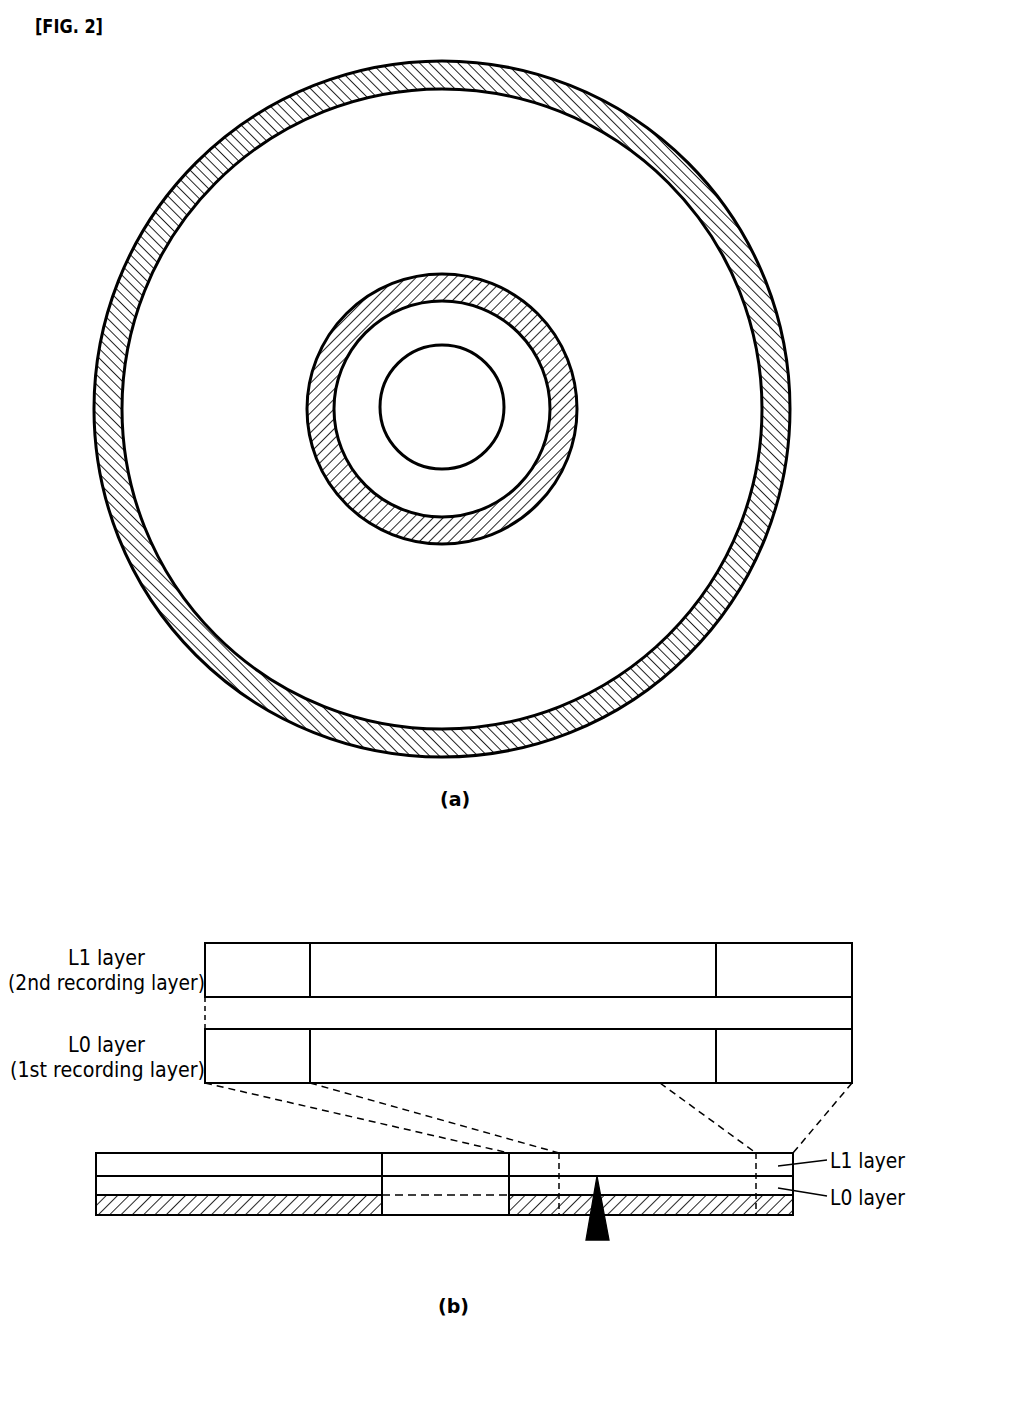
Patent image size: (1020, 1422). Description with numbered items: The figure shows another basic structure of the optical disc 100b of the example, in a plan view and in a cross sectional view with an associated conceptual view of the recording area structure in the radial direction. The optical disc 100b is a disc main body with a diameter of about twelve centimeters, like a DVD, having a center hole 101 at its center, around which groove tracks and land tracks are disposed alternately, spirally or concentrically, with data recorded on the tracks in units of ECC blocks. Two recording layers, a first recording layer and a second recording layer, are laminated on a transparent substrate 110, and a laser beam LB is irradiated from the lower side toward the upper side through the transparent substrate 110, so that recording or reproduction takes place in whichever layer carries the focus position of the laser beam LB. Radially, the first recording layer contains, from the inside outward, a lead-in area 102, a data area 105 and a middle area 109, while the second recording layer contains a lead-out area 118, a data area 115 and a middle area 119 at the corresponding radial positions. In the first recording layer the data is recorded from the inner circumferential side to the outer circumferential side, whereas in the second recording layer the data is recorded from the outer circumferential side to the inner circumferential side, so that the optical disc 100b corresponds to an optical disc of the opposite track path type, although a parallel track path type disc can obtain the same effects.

The optical disc 100b is at (618, 90).
The center hole 101 is at (383, 381).
The lead-in area 102 is at (290, 1028).
The lead-out area 118 is at (289, 943).
The data area 105 is at (703, 380).
The data area 115 is at (595, 653).
The middle area 109 is at (767, 533).
The middle area 119 is at (790, 790).
The transparent substrate 110 is at (787, 1242).
The laser beam LB is at (598, 1221).